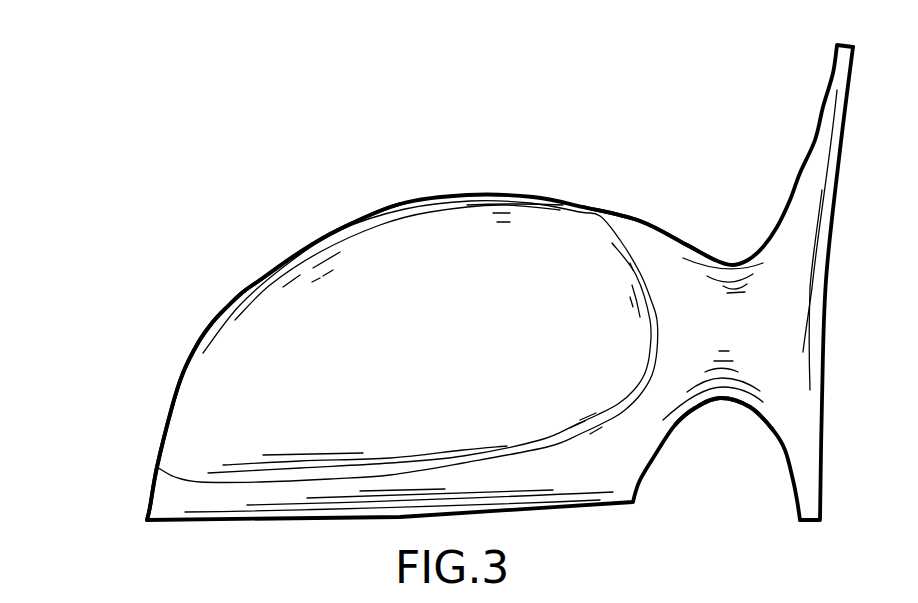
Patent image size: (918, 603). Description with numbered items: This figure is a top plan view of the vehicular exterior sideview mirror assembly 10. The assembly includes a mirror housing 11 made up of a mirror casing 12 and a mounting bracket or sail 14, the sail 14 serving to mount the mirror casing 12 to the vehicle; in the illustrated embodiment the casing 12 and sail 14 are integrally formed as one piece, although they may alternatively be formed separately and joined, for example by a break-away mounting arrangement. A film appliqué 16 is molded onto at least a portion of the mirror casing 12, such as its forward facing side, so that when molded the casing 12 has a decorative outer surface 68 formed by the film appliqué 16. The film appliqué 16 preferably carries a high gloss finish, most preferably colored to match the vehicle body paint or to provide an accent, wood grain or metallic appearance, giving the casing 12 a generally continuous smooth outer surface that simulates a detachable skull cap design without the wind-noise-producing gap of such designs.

The vehicular exterior sideview mirror assembly 10 is at (659, 208).
The mirror housing 11 is at (594, 192).
The mirror casing 12 is at (134, 486).
The mounting bracket or sail 14 is at (739, 412).
The film appliqué 16 is at (472, 258).
The decorative outer surface 68 is at (384, 270).